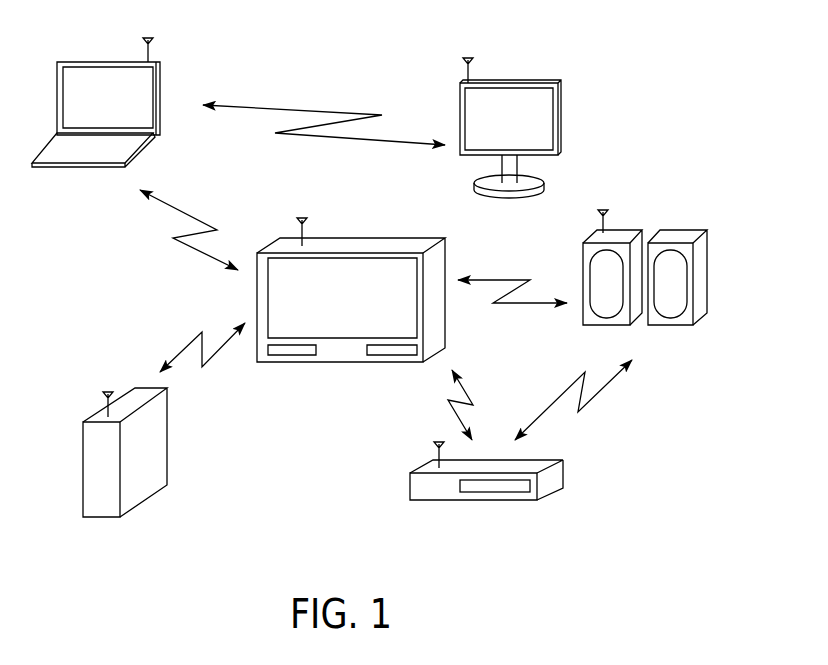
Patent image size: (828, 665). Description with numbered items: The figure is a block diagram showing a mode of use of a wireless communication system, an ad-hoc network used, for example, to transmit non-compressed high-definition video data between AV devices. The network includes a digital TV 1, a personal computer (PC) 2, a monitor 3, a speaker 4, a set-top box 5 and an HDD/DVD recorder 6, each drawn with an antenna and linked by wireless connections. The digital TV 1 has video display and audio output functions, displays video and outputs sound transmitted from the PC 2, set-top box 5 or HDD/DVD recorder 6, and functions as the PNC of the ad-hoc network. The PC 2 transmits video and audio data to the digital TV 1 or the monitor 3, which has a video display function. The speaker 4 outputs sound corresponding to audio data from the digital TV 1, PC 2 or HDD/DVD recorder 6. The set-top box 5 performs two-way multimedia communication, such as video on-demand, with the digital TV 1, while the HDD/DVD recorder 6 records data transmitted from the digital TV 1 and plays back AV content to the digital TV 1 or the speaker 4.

The digital TV 1 is at (382, 237).
The personal computer (PC) 2 is at (105, 62).
The monitor (display) 3 is at (520, 80).
The speaker 4 is at (683, 230).
The set-top box 5 is at (167, 418).
The HDD/DVD recorder 6 is at (565, 472).